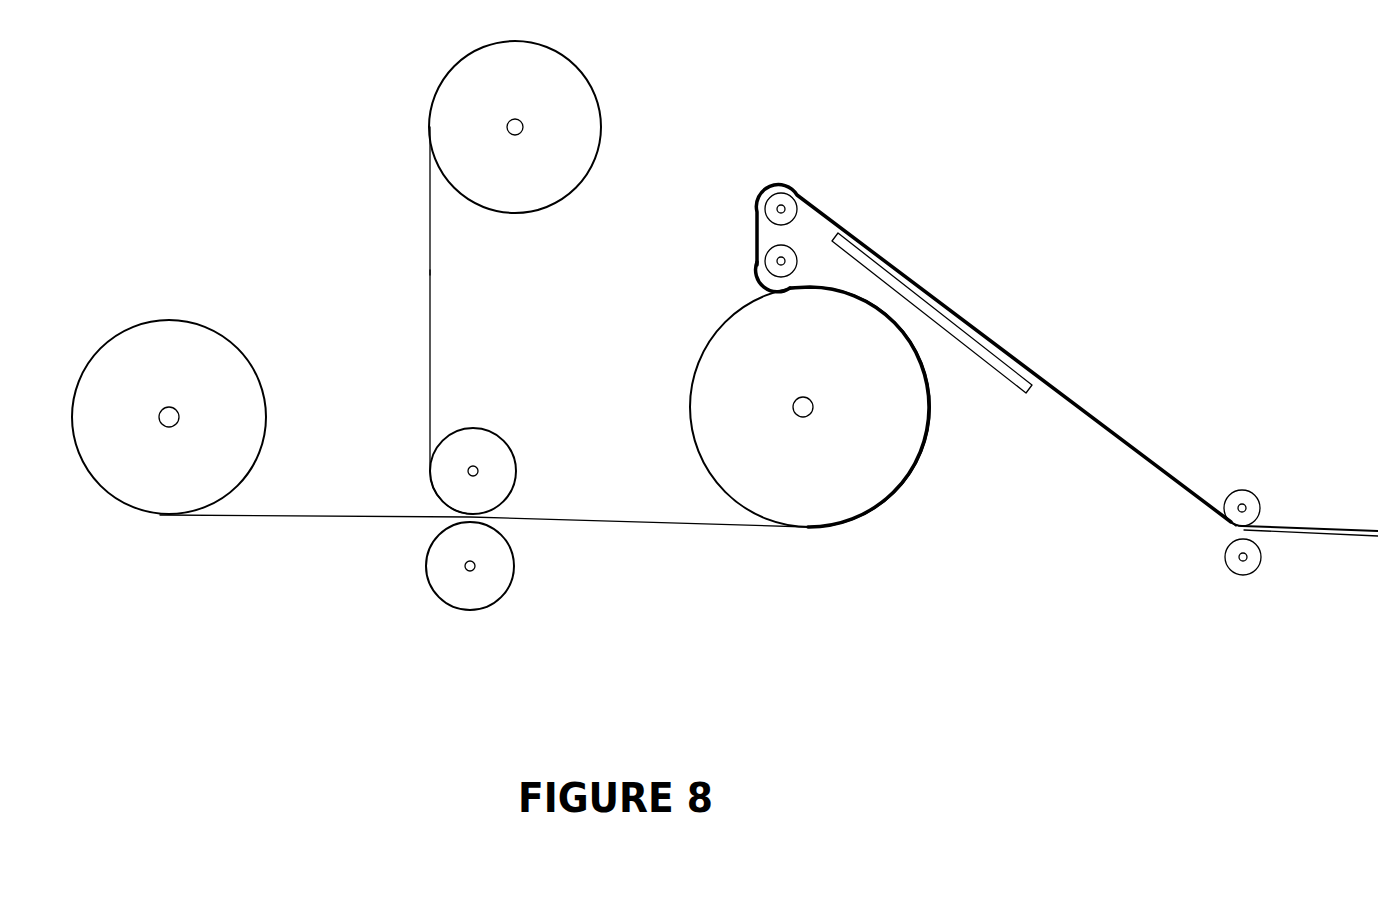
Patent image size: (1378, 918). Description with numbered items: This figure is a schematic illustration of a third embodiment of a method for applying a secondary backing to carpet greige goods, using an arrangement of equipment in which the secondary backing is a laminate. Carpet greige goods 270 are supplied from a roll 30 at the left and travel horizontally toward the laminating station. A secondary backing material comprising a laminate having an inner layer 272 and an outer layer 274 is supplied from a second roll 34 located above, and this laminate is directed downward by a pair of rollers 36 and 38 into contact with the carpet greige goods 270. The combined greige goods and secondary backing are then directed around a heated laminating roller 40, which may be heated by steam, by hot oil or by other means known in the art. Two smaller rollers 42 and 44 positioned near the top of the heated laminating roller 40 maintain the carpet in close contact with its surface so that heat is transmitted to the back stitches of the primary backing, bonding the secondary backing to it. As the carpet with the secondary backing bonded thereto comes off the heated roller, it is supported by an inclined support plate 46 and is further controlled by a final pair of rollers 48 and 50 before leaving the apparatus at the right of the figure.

The roll 30 is at (238, 392).
The roll 34 is at (583, 129).
The roller 36 is at (496, 450).
The roller 38 is at (496, 572).
The heated laminating roller 40 is at (732, 352).
The roller 42 is at (798, 209).
The roller 44 is at (798, 262).
The support plate 46 is at (1020, 393).
The roller 48 is at (1252, 506).
The roller 50 is at (1253, 565).
The carpet greige goods 270 is at (303, 513).
The inner layer 272 is at (422, 270).
The outer layer 274 is at (434, 335).